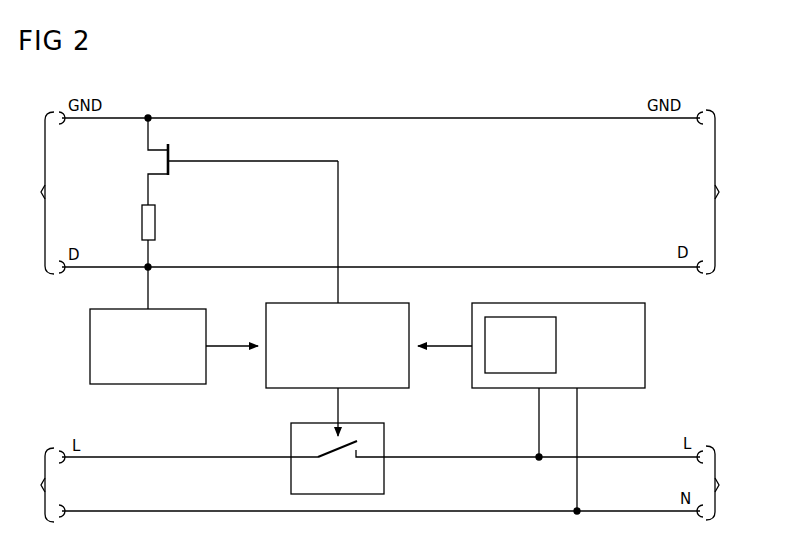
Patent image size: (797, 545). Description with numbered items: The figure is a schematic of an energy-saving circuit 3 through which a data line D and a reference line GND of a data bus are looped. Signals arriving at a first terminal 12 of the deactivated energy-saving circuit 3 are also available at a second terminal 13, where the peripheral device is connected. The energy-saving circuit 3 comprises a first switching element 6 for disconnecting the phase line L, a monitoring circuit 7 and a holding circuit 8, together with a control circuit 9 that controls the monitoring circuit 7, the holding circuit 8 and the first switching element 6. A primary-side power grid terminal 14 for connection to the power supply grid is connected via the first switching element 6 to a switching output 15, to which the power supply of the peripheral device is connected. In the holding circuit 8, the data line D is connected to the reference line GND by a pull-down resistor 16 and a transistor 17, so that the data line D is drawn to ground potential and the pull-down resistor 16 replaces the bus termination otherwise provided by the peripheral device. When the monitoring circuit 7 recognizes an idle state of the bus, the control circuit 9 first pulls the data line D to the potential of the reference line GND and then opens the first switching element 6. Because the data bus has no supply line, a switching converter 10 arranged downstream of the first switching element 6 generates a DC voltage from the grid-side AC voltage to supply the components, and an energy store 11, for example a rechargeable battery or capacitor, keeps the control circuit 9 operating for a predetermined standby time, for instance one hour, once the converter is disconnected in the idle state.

The energy-saving circuit 3 is at (566, 66).
The first switching element 6 is at (291, 470).
The monitoring circuit 7 is at (148, 384).
The holding circuit 8 is at (125, 180).
The control circuit 9 is at (409, 370).
The switching converter 10 is at (645, 346).
The energy store 11 is at (556, 346).
The first terminal 12 is at (39, 193).
The second terminal 13 is at (721, 192).
The primary-side power grid terminal 14 is at (39, 485).
The switching output 15 is at (723, 483).
The pull-down resistor 16 is at (155, 222).
The transistor 17 is at (172, 166).